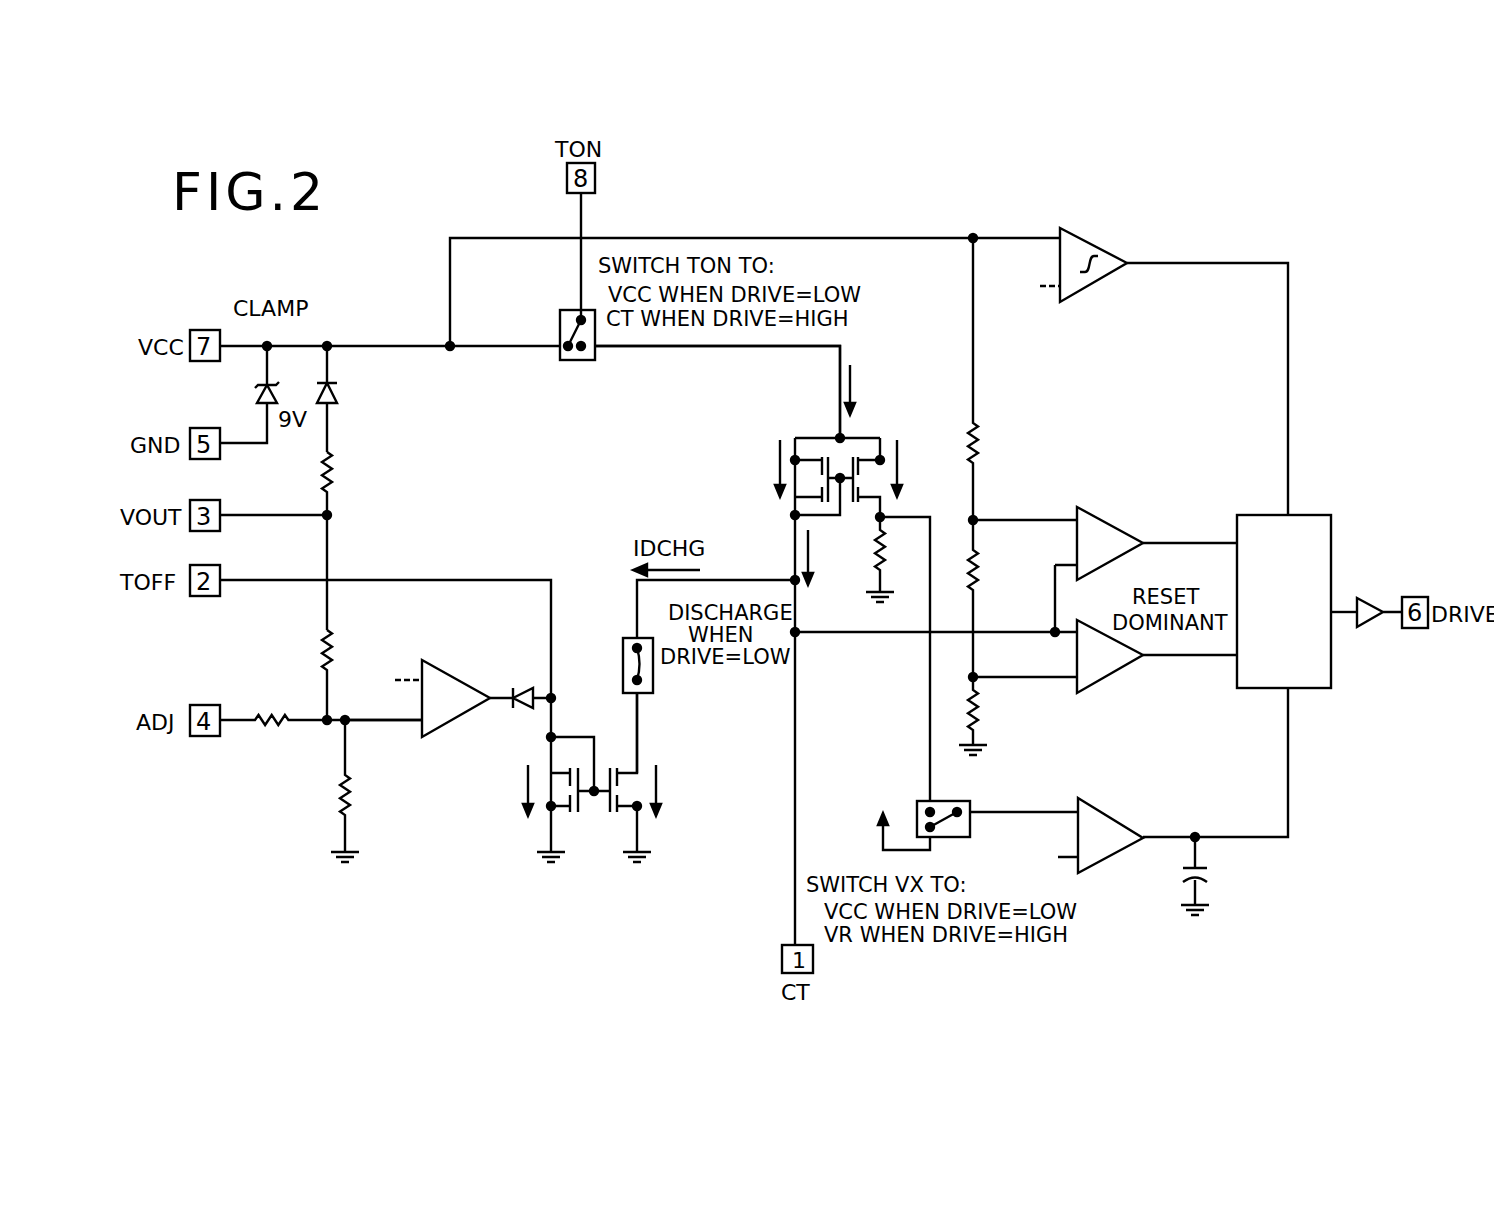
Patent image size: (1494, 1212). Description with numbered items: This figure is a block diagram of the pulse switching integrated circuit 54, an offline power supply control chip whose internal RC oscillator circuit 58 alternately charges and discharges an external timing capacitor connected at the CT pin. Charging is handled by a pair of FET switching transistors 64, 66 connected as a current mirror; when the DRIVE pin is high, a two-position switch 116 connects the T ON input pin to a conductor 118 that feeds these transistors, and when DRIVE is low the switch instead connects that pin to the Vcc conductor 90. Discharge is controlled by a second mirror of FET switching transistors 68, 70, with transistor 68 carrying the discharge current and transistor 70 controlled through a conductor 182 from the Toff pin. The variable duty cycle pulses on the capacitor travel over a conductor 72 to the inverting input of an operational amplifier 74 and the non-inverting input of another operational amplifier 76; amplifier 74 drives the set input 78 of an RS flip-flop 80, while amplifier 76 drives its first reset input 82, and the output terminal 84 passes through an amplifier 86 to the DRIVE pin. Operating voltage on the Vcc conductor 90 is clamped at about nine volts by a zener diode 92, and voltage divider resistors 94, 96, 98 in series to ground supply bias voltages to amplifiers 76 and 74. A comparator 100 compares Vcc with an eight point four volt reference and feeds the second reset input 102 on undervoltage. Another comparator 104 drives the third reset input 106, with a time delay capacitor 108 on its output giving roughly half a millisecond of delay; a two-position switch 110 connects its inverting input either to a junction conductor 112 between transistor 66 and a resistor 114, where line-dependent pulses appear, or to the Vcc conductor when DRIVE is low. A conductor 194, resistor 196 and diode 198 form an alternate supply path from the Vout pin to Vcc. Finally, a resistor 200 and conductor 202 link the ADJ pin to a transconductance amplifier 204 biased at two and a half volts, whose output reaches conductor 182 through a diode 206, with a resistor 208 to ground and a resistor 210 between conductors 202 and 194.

The pulse switching integrated circuit 54 is at (415, 300).
The RC oscillator circuit 58 is at (697, 490).
The FET switching transistor 64 is at (790, 506).
The FET switching transistor 66 is at (905, 486).
The FET switching transistor 68 is at (609, 825).
The FET switching transistor 70 is at (574, 820).
The conductor 72 is at (848, 635).
The operational amplifier 74 is at (1115, 675).
The operational amplifier 76 is at (1100, 532).
The set input 78 is at (1210, 658).
The RS flip-flop 80 is at (1237, 588).
The first reset input 82 is at (1178, 543).
The output terminal 84 is at (1340, 614).
The amplifier 86 is at (1372, 598).
The Vcc conductor 90 is at (385, 346).
The zener diode 92 is at (257, 388).
The voltage divider resistor 94 is at (980, 442).
The voltage divider resistor 96 is at (982, 568).
The voltage divider resistor 98 is at (982, 708).
The comparator 100 is at (1098, 240).
The second reset input 102 is at (1288, 503).
The comparator 104 is at (1090, 804).
The third reset input 106 is at (1288, 700).
The time delay capacitor 108 is at (1165, 871).
The two-position switch 110 is at (942, 800).
The junction conductor 112 is at (878, 537).
The resistor 114 is at (870, 568).
The two-position switch 116 is at (580, 362).
The conductor 118 is at (760, 348).
The conductor 182 is at (414, 580).
The conductor 194 is at (298, 508).
The resistor 196 is at (335, 468).
The diode 198 is at (340, 388).
The resistor 200 is at (268, 730).
The conductor 202 is at (365, 722).
The transconductance amplifier 204 is at (460, 740).
The diode 206 is at (520, 688).
The resistor 208 is at (333, 794).
The resistor 210 is at (325, 650).